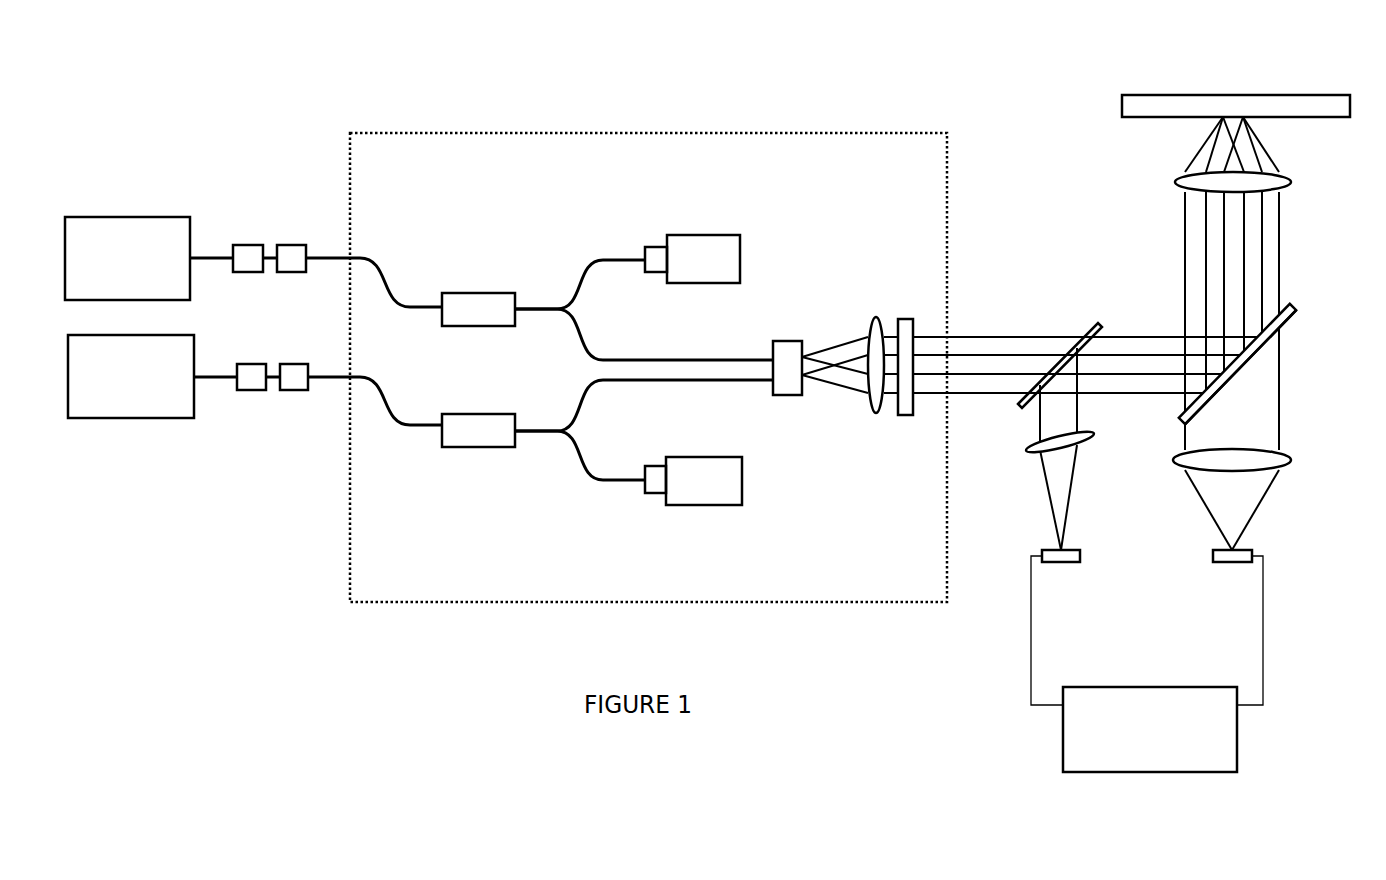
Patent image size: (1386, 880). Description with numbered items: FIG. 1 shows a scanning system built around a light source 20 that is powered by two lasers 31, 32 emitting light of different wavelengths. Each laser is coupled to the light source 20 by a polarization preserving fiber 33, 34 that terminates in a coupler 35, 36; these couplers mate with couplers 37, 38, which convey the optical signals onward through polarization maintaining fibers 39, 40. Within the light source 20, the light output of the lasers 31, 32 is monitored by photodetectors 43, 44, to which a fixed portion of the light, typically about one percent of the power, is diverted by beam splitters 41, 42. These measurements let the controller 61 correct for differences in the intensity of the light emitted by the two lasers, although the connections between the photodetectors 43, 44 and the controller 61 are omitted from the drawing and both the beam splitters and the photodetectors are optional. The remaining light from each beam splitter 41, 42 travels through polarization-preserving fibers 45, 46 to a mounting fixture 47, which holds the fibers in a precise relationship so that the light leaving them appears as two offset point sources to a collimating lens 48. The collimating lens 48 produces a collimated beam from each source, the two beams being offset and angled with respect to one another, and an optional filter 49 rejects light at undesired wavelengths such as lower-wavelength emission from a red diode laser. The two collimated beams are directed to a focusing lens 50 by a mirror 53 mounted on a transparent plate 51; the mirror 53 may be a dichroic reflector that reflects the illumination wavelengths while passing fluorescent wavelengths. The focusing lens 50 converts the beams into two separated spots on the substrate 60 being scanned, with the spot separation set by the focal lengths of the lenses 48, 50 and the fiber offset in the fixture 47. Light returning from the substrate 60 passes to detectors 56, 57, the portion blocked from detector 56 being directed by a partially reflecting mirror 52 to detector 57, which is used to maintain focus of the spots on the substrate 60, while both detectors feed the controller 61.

The light source 20 is at (589, 128).
The laser 31 is at (128, 217).
The laser 32 is at (120, 418).
The polarization preserving fiber 33 is at (196, 258).
The polarization preserving fiber 34 is at (201, 377).
The coupler 35 is at (243, 245).
The coupler 36 is at (250, 364).
The coupler 37 is at (288, 245).
The coupler 38 is at (296, 364).
The polarization maintaining fiber 39 is at (372, 256).
The polarization maintaining fiber 40 is at (360, 376).
The beam splitter 41 is at (457, 293).
The beam splitter 42 is at (457, 414).
The photodetector 43 is at (690, 235).
The photodetector 44 is at (680, 457).
The fiber 45 is at (612, 382).
The fiber 46 is at (680, 357).
The mounting fixture 47 is at (781, 341).
The collimating lens 48 is at (876, 413).
The filter 49 is at (905, 415).
The focusing lens 50 is at (1291, 178).
The transparent plate 51 is at (1297, 303).
The partially reflecting mirror 52 is at (1103, 323).
The mirror 53 is at (1247, 370).
The detector 56 is at (1212, 556).
The detector 57 is at (1072, 550).
The substrate 60 is at (1270, 95).
The controller 61 is at (1237, 742).